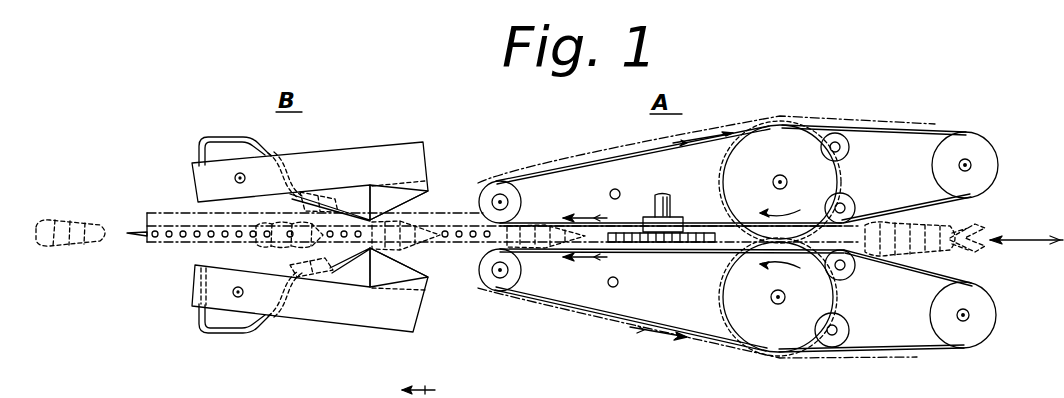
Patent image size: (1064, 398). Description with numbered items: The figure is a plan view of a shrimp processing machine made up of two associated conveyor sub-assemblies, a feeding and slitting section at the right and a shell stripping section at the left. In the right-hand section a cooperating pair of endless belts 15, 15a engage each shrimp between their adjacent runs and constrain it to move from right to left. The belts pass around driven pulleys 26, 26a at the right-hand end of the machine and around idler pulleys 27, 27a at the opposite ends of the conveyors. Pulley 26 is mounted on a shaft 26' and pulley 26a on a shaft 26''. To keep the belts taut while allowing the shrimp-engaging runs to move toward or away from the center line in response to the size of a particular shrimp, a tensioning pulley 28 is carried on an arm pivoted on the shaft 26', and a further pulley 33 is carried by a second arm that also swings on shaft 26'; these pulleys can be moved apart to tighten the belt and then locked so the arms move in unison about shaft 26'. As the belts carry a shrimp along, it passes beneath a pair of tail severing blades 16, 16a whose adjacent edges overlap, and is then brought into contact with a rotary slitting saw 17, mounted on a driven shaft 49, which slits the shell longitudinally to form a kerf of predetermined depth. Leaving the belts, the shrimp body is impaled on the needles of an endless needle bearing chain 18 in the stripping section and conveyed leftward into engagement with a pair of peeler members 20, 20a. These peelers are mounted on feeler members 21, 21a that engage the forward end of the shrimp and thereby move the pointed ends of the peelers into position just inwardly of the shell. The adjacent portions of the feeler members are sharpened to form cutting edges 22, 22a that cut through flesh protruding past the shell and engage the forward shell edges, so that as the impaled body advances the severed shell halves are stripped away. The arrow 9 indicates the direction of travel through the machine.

The direction of feed arrow 9 is at (424, 388).
The endless belt 15 is at (935, 102).
The endless belt 15a is at (925, 352).
The tail severing blade 16 is at (774, 146).
The tail severing blade 16a is at (780, 323).
The saw 17 is at (695, 244).
The needle bearing chain 18 is at (493, 305).
The peeler member 20 is at (360, 208).
The peeler member 20a is at (362, 258).
The feeler member 21 is at (342, 152).
The feeler member 21a is at (342, 314).
The cutting edge 22 is at (377, 210).
The cutting edge 22a is at (377, 258).
The pulley 26 is at (974, 155).
The shaft 26' is at (1000, 165).
The shaft 26'' is at (1001, 312).
The pulley 26a is at (976, 338).
The idler pulley 27 is at (505, 196).
The idler pulley 27a is at (503, 283).
The pulley 28 is at (853, 204).
The pulley 33 is at (849, 147).
The driven shaft 49 is at (673, 205).